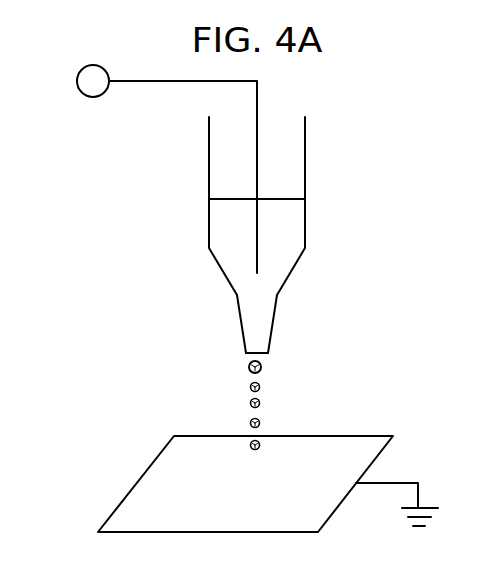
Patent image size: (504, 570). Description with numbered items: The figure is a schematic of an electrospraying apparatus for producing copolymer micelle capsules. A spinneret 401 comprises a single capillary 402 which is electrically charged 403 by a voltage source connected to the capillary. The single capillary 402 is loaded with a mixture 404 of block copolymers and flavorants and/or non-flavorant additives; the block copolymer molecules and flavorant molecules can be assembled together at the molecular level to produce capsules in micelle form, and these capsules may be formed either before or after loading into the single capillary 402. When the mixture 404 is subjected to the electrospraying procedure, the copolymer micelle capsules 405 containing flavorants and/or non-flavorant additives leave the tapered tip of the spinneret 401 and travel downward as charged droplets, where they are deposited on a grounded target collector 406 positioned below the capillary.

The spinneret 401 is at (260, 235).
The single capillary 402 is at (305, 143).
The electrical charge 403 is at (257, 101).
The mixture 404 is at (305, 226).
The copolymer micelle capsules 405 is at (261, 403).
The grounded target collector 406 is at (118, 506).